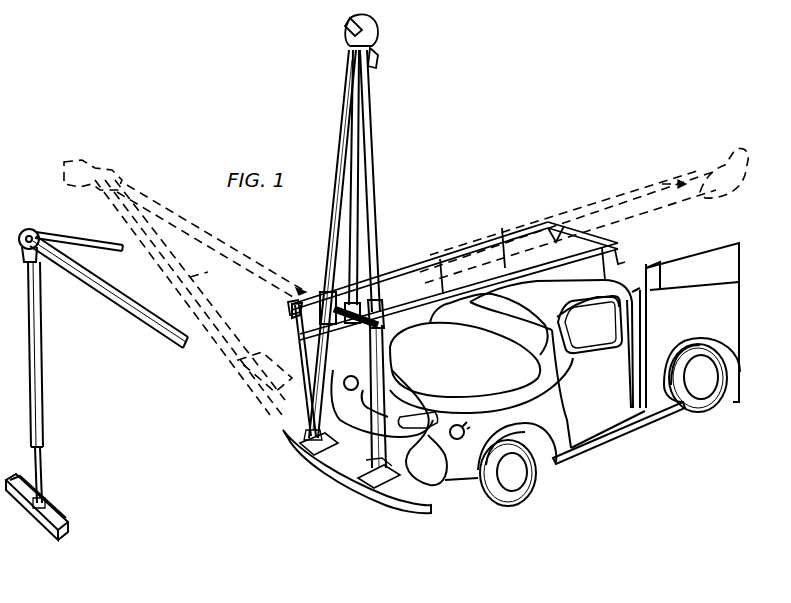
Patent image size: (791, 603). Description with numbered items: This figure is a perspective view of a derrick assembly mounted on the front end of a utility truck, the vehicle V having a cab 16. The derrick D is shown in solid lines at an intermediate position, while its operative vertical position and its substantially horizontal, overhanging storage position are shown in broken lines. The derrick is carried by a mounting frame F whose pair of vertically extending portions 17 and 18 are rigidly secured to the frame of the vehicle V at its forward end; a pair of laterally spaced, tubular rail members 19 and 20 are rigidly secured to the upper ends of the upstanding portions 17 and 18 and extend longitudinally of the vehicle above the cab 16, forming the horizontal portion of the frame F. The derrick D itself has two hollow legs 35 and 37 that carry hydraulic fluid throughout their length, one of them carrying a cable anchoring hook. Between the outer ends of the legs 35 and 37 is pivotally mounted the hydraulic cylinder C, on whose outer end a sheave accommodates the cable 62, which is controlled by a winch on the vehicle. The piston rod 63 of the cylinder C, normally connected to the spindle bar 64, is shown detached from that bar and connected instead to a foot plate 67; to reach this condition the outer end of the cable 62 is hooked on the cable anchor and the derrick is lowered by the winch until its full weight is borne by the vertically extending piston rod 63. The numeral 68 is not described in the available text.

The cab 16 is at (600, 327).
The vertically extending portion 17 is at (388, 440).
The vertically extending portion 18 is at (305, 352).
The rail member 19 is at (400, 274).
The rail member 20 is at (556, 262).
The leg 35 is at (333, 240).
The leg 37 is at (382, 244).
The cable 62 is at (65, 234).
The piston rod 63 is at (40, 480).
The spindle bar 64 is at (366, 322).
The foot plate 67 is at (62, 520).
The post 68 is at (40, 356).
The hydraulic cylinder C is at (359, 160).
The derrick D is at (390, 174).
The mounting frame F is at (388, 425).
The vehicle V is at (592, 446).